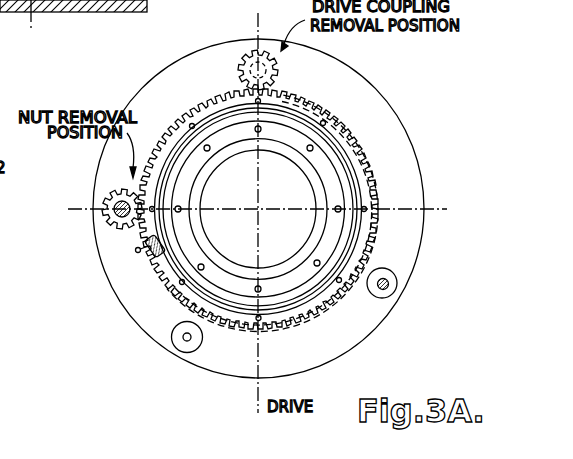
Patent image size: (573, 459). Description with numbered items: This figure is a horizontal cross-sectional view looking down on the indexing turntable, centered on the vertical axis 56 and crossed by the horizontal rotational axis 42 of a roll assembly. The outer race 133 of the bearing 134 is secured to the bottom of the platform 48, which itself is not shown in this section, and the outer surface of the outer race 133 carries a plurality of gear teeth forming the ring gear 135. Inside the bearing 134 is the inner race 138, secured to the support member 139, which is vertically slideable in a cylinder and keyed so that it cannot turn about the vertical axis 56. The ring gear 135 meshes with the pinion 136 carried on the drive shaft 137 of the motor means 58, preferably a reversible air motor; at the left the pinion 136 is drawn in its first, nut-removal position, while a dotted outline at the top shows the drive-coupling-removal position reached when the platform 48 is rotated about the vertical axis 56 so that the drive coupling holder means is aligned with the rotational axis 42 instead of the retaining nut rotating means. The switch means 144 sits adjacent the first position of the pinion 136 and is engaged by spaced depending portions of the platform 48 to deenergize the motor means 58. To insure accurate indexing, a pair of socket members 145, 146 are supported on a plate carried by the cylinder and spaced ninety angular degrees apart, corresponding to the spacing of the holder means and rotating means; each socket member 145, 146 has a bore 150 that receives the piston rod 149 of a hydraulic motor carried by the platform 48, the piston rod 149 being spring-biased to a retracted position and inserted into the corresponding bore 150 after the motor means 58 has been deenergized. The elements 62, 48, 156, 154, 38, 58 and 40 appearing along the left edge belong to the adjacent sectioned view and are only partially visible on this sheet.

The rotational axis 42 is at (252, 393).
The vertical axis 56 is at (260, 208).
The outer race 133 is at (342, 140).
The bearing 134 is at (350, 160).
The ring gear 135 is at (205, 100).
The pinion 136 is at (104, 209).
The drive shaft 137 is at (118, 192).
The inner race 138 is at (345, 180).
The support member 139 is at (210, 253).
The switch means 144 is at (160, 258).
The socket member 145 is at (397, 285).
The socket member 146 is at (182, 350).
The piston rod 149 is at (386, 281).
The bore 150 is at (182, 337).
The fragment 62 is at (0, 203).
The platform 48 is at (14, 257).
The fragment 156 is at (0, 280).
The fragment 154 is at (0, 305).
The fragment 38 is at (4, 340).
The motor means 58 is at (8, 372).
The fragment 40 is at (23, 457).